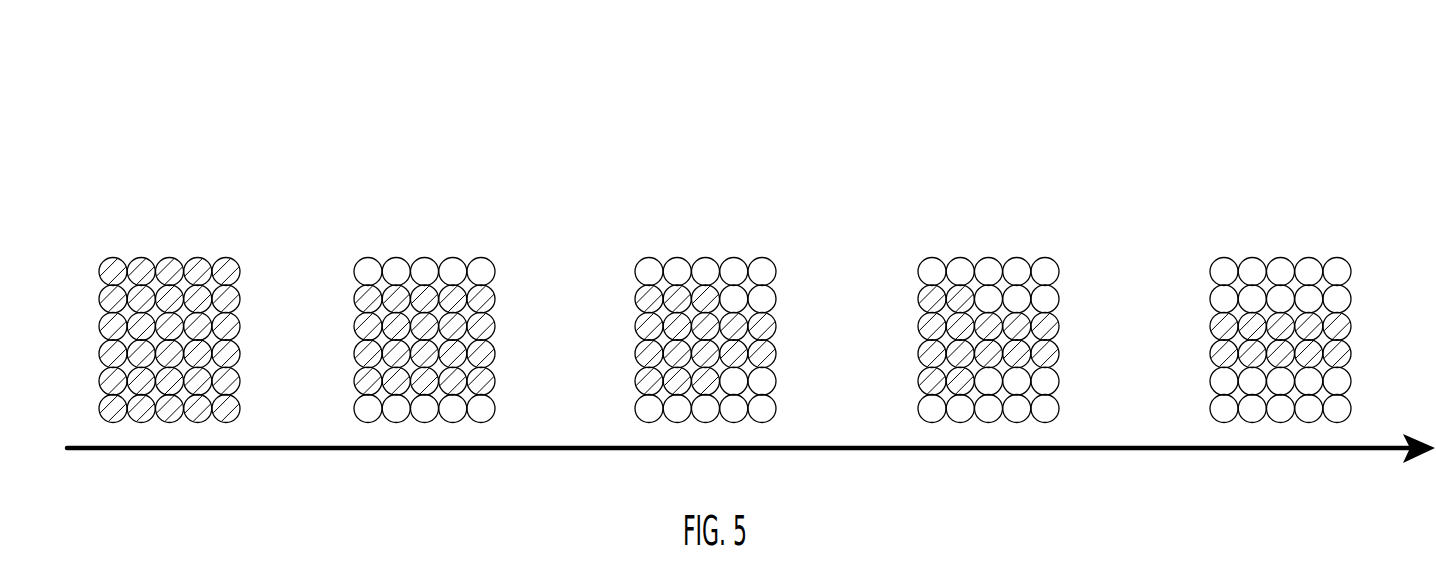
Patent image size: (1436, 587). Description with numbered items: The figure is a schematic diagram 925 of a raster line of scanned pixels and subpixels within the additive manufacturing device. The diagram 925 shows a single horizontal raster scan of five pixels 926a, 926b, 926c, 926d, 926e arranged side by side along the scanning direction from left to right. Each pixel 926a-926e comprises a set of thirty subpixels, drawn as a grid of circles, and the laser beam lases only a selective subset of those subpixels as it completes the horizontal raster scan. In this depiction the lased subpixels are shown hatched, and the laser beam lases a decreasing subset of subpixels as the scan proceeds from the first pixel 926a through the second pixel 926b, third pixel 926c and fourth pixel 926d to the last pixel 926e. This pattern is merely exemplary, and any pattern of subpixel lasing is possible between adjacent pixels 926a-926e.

The diagram 925 is at (1250, 80).
The pixel 926a is at (192, 312).
The pixel 926b is at (447, 310).
The pixel 926c is at (727, 310).
The pixel 926d is at (1012, 310).
The pixel 926e is at (1300, 310).